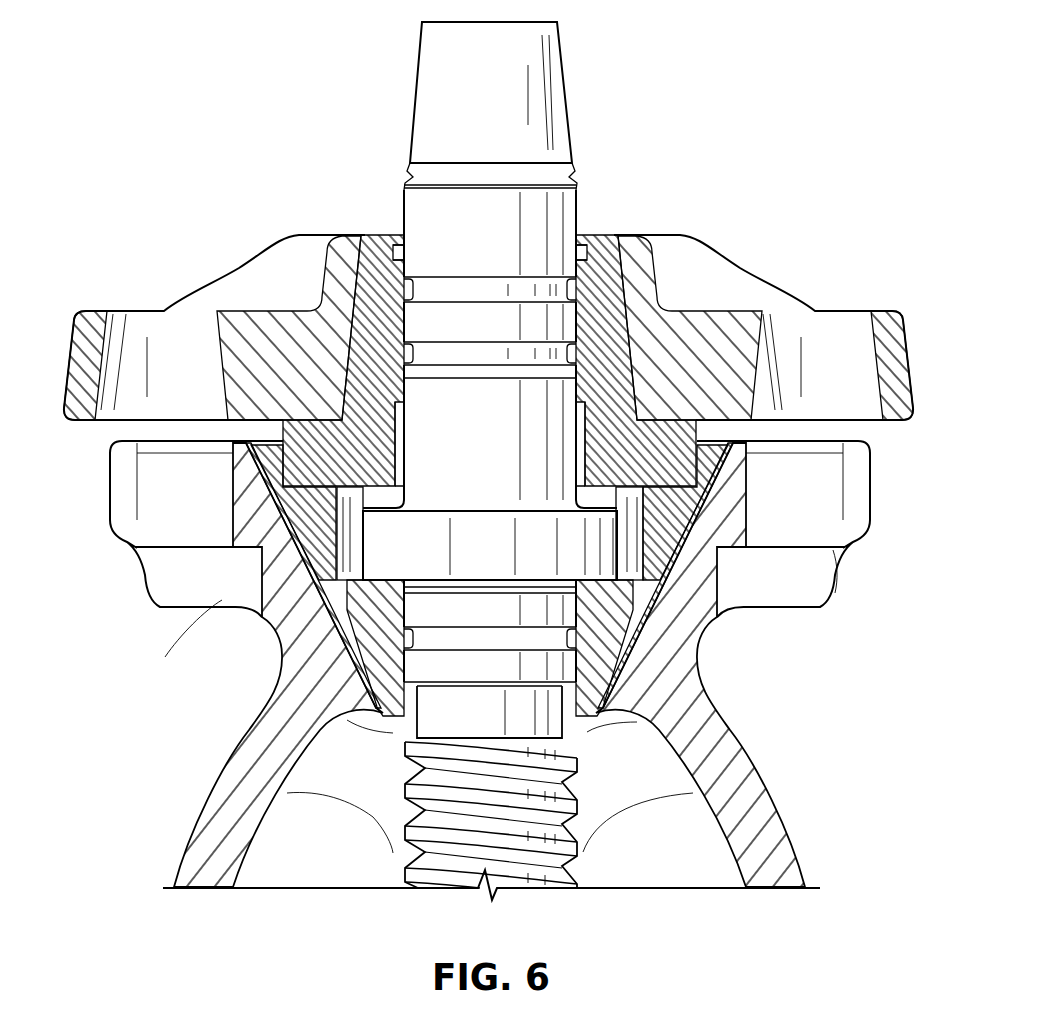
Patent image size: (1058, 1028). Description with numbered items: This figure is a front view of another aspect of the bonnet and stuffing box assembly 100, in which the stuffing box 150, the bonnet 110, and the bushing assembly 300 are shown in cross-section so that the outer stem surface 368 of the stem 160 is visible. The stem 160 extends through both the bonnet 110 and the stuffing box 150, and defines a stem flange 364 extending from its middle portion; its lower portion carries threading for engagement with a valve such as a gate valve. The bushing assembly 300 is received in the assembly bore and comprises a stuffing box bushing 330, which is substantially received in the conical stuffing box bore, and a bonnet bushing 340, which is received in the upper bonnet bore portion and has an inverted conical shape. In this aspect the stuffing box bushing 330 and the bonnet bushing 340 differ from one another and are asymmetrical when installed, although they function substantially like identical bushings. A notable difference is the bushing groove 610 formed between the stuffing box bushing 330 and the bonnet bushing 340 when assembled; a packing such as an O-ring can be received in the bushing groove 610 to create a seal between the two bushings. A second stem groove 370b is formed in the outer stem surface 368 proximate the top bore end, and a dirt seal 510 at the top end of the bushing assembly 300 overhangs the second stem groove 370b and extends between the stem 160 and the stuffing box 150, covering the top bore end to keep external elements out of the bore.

The bonnet and stuffing box assembly 100 is at (157, 218).
The bonnet 110 is at (150, 517).
The stuffing box 150 is at (733, 311).
The stem 160 is at (457, 230).
The bushing assembly 300 is at (353, 353).
The stuffing box bushing 330 is at (602, 318).
The bonnet bushing 340 is at (657, 543).
The stem flange 364 is at (570, 537).
The outer stem surface 368 is at (465, 710).
The second stem groove 370b is at (583, 232).
The dirt seal 510 is at (393, 243).
The bushing groove 610 is at (257, 545).